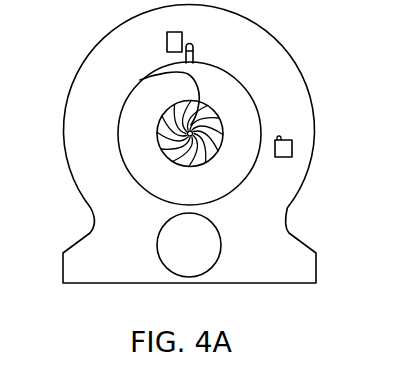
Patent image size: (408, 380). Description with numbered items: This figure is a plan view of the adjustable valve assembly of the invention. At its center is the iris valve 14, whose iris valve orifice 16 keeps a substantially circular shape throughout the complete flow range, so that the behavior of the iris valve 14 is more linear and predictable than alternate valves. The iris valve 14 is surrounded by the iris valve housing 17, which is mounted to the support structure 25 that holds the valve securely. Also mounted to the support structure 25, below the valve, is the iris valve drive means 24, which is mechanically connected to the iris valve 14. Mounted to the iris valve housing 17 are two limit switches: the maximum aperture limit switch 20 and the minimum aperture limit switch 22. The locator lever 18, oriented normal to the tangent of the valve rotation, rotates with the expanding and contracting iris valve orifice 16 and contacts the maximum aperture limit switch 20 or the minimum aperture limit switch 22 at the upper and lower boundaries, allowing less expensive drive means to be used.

The iris valve 14 is at (163, 152).
The iris valve orifice 16 is at (166, 72).
The iris valve housing 17 is at (237, 114).
The locator lever 18 is at (193, 52).
The maximum aperture limit switch 20 is at (290, 157).
The minimum aperture limit switch 22 is at (167, 40).
The iris valve drive means 24 is at (176, 240).
The support structure 25 is at (278, 261).